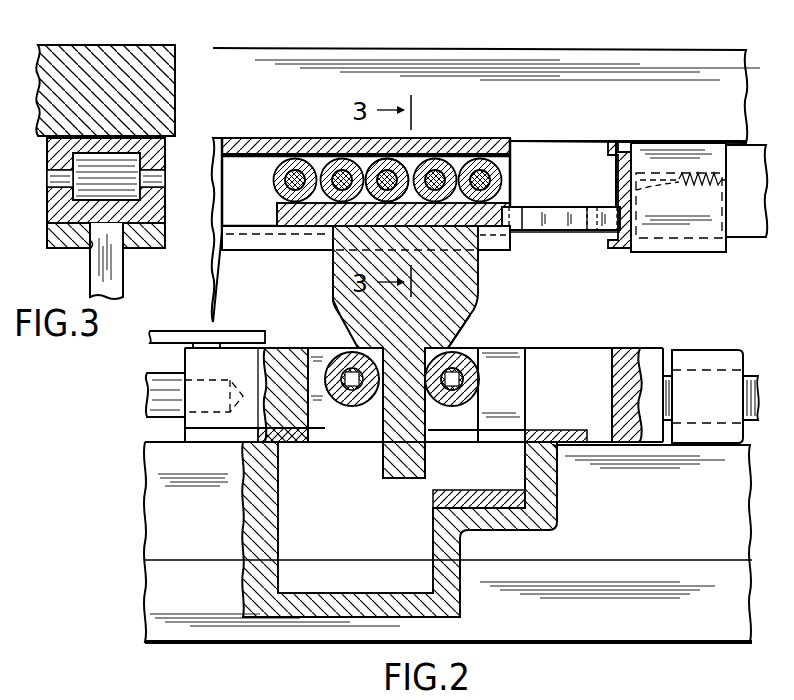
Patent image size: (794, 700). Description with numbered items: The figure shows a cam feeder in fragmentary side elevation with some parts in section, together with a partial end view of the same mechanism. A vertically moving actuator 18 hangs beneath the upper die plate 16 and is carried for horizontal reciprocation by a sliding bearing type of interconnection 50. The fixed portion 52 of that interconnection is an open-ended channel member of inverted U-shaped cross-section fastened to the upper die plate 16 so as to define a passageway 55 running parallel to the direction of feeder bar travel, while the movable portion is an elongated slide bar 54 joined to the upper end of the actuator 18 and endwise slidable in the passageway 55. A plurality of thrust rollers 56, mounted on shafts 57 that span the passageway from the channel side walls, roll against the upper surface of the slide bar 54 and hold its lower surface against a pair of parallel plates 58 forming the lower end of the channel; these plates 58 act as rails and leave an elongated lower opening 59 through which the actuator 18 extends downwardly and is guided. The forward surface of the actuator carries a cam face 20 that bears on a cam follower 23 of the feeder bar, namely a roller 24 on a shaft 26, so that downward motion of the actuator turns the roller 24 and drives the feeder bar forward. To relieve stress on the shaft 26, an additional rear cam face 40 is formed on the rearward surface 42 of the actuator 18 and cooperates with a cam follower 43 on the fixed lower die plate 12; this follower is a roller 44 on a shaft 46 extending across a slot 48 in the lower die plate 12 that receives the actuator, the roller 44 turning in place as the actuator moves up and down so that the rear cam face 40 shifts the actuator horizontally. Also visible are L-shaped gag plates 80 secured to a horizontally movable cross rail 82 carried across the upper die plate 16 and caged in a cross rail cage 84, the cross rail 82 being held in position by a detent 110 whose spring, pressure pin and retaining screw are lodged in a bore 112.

In FIG. 2, the lower die plate 12 is at (652, 509).
In FIG. 3, the upper die plate 16 is at (165, 98).
In FIG. 2, the upper die plate 16 is at (592, 114).
In FIG. 3, the actuator 18 is at (95, 275).
In FIG. 2, the actuator 18 is at (470, 300).
In FIG. 2, the cam face 20 is at (345, 335).
In FIG. 2, the cam follower 23 is at (344, 422).
In FIG. 2, the roller 24 is at (372, 405).
In FIG. 2, the shaft 26 is at (340, 387).
In FIG. 2, the rear cam face 40 is at (452, 340).
In FIG. 2, the rearward surface 42 is at (480, 266).
In FIG. 2, the cam follower 43 is at (464, 415).
In FIG. 2, the roller 44 is at (480, 372).
In FIG. 2, the shaft 46 is at (466, 394).
In FIG. 2, the slot 48 is at (387, 517).
In FIG. 3, the sliding bearing type of interconnection 50 is at (162, 260).
In FIG. 2, the sliding bearing type of interconnection 50 is at (164, 258).
In FIG. 3, the fixed portion 52 is at (60, 150).
In FIG. 3, the slide bar 54 is at (78, 212).
In FIG. 2, the slide bar 54 is at (318, 222).
In FIG. 2, the passageway 55 is at (322, 160).
In FIG. 3, the thrust rollers 56 is at (120, 160).
In FIG. 2, the thrust rollers 56 is at (437, 178).
In FIG. 2, the shafts 57 is at (398, 198).
In FIG. 3, the plates 58 is at (60, 237).
In FIG. 2, the plates 58 is at (248, 243).
In FIG. 3, the lower opening 59 is at (92, 247).
In FIG. 2, the gag plates 80 is at (570, 210).
In FIG. 2, the cross rail 82 is at (622, 180).
In FIG. 2, the cross rail cage 84 is at (622, 150).
In FIG. 2, the detent 110 is at (682, 152).
In FIG. 2, the bore 112 is at (712, 190).